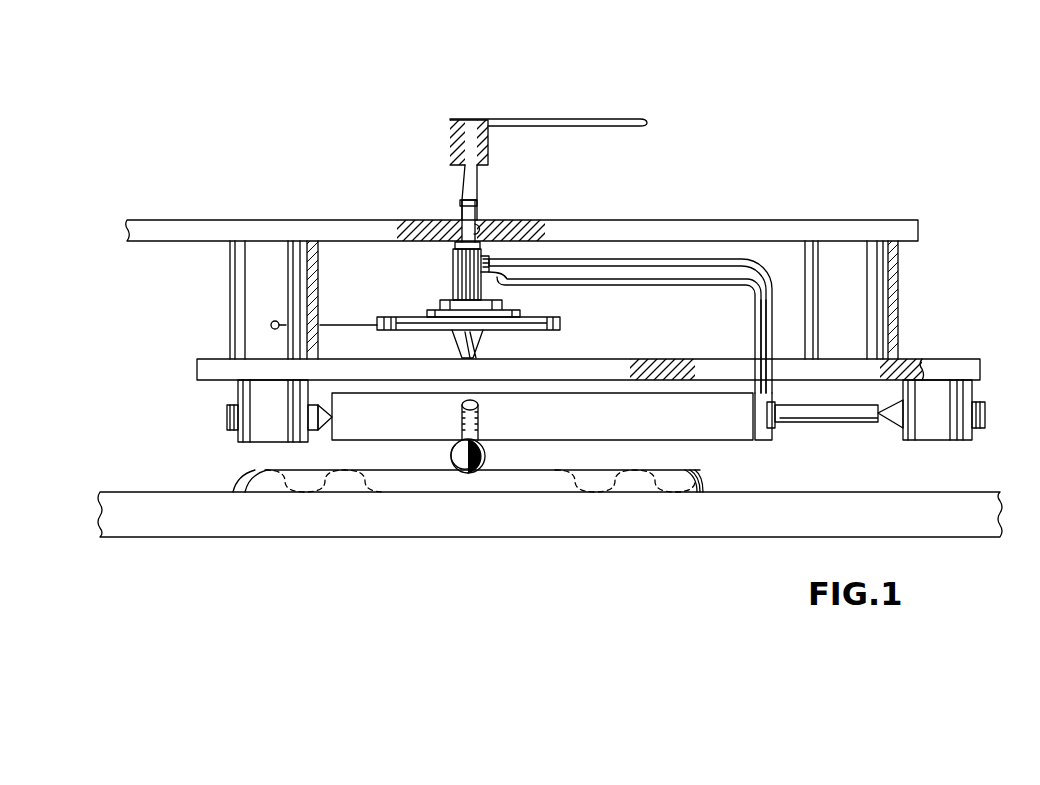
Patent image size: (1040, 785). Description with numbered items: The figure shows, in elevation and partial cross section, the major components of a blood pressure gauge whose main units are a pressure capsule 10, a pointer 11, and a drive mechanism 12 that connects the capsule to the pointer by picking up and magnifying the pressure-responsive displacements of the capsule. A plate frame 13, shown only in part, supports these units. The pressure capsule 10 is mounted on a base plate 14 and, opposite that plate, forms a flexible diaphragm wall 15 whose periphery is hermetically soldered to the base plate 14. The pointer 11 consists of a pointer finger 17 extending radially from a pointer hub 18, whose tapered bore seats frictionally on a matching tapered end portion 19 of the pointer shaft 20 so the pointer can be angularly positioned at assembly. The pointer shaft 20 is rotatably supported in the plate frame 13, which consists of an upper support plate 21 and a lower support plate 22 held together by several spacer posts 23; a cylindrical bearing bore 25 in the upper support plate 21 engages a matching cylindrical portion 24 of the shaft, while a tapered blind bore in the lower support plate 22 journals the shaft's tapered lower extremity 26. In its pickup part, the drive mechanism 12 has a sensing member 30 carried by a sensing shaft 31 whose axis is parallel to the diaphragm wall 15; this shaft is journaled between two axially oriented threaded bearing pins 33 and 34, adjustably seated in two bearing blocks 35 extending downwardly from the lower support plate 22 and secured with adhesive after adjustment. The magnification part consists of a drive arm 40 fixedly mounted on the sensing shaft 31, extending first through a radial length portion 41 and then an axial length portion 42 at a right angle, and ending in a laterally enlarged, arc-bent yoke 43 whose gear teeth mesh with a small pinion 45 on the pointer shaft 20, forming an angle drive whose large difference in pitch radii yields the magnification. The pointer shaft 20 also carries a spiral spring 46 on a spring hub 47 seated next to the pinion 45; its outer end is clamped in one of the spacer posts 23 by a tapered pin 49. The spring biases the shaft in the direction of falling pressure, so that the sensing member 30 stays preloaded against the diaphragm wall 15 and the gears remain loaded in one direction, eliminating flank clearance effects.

The pressure capsule 10 is at (372, 540).
The pointer 11 is at (492, 100).
The drive mechanism 12 is at (358, 298).
The plate frame 13 is at (960, 332).
The base plate 14 is at (168, 530).
The diaphragm wall 15 is at (238, 480).
The pointer finger 17 is at (597, 118).
The pointer hub 18 is at (453, 150).
The tapered end portion 19 is at (467, 190).
The pointer shaft 20 is at (460, 212).
The upper support plate 21 is at (897, 236).
The lower support plate 22 is at (957, 368).
The spacer posts 23 is at (246, 272).
The cylindrical portion 24 is at (478, 215).
The cylindrical bearing bore 25 is at (484, 232).
The tapered lower extremity 26 is at (482, 352).
The sensing member 30 is at (486, 464).
The sensing shaft 31 is at (725, 442).
The threaded bearing pin 33 is at (232, 416).
The threaded bearing pin 34 is at (323, 432).
The bearing blocks 35 is at (278, 432).
The drive arm 40 is at (694, 256).
The radial length portion 41 is at (762, 322).
The axial length portion 42 is at (625, 262).
The yoke 43 is at (545, 272).
The pinion 45 is at (455, 278).
The spiral spring 46 is at (448, 332).
The spring hub 47 is at (446, 306).
The tapered pin 49 is at (270, 326).